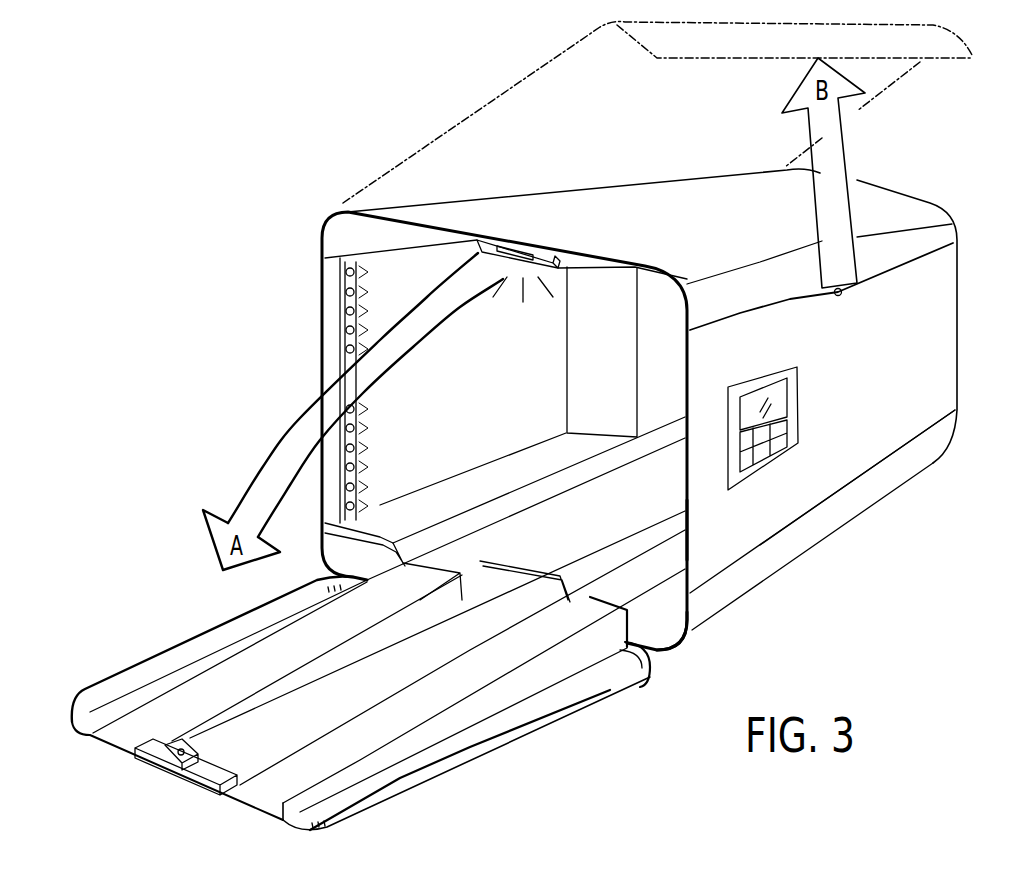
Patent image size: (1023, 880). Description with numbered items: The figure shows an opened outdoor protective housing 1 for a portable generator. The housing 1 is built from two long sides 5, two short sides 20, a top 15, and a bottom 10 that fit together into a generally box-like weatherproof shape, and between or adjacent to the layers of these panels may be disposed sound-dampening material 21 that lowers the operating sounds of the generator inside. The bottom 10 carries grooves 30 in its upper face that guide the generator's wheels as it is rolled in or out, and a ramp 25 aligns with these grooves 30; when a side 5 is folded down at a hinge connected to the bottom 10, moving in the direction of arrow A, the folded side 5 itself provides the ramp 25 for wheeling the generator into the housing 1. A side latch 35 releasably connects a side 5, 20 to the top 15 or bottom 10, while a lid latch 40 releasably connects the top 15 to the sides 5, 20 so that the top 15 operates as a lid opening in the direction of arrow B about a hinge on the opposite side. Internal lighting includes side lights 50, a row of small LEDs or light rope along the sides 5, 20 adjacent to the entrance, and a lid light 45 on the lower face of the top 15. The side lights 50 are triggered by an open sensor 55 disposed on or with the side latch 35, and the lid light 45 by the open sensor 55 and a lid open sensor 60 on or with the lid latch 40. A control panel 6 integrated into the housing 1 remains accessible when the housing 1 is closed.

The housing 1 is at (356, 95).
The long side 5 is at (320, 348).
The control panel 6 is at (793, 412).
The bottom 10 is at (858, 500).
The top 15 is at (505, 82).
The short side 20 is at (492, 757).
The sound-dampening material 21 is at (658, 625).
The ramp 25 is at (598, 628).
The grooves 30 is at (690, 522).
The side latch 35 is at (180, 760).
The lid latch 40 is at (790, 300).
The lid light 45 is at (485, 258).
The side lights 50 is at (338, 318).
The open sensor 55 is at (513, 243).
The lid open sensor 60 is at (841, 297).